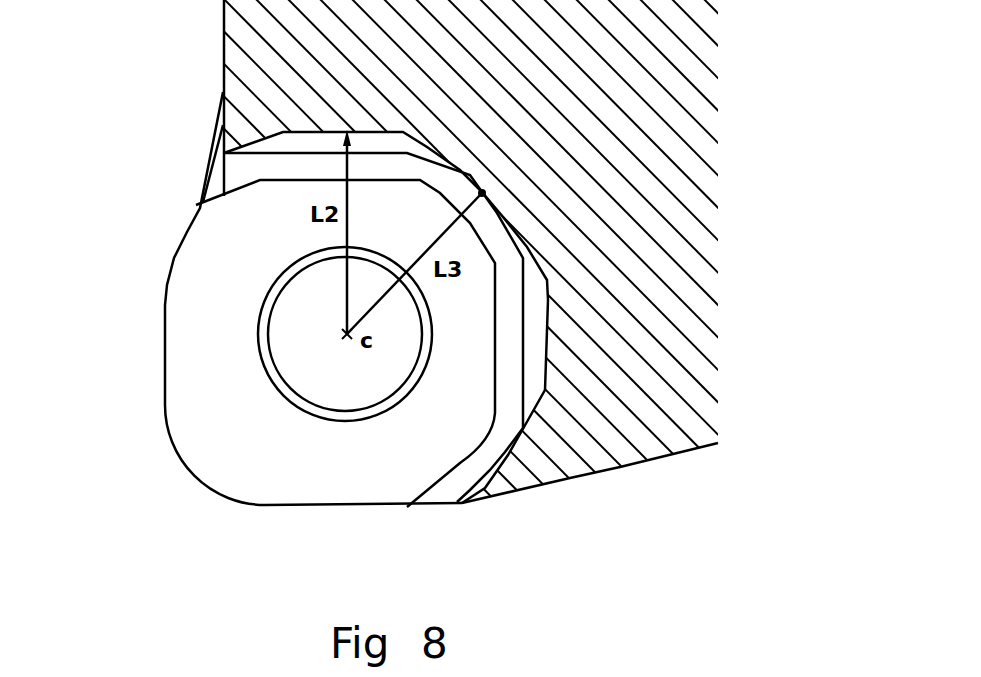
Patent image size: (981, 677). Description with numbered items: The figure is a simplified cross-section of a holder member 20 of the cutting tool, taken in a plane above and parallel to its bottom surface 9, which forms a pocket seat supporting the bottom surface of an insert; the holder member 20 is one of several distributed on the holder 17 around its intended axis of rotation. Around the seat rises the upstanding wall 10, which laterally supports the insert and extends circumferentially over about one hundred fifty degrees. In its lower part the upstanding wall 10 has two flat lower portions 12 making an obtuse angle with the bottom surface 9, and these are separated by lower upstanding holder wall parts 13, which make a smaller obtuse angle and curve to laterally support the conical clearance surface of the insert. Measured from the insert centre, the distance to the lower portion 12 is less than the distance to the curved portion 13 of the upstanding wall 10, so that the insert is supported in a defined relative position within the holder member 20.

The bottom surface 9 is at (287, 477).
The upstanding wall 10 is at (492, 470).
The lower portions 12 is at (533, 367).
The lower upstanding holder wall parts 13 is at (482, 193).
The holder 17 is at (190, 73).
The holder member 20 is at (130, 509).